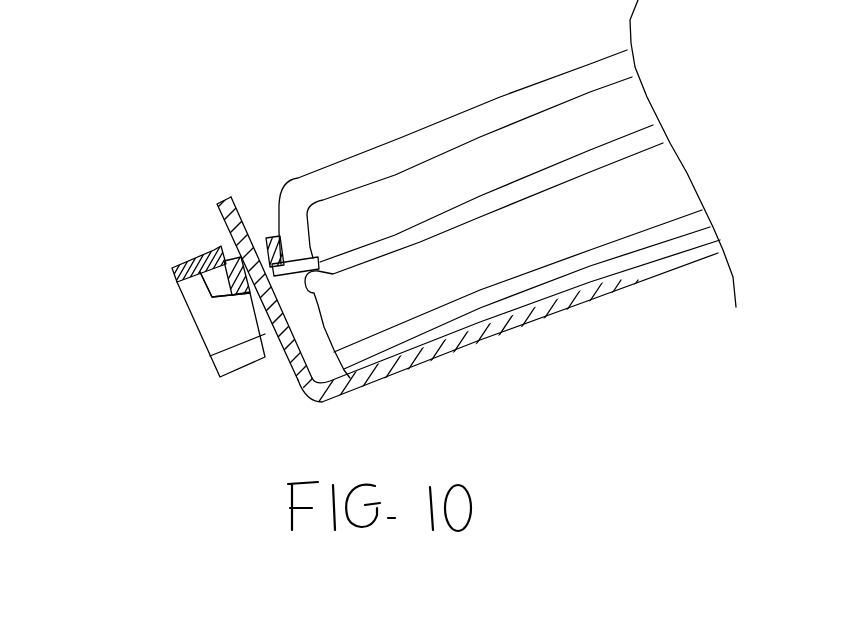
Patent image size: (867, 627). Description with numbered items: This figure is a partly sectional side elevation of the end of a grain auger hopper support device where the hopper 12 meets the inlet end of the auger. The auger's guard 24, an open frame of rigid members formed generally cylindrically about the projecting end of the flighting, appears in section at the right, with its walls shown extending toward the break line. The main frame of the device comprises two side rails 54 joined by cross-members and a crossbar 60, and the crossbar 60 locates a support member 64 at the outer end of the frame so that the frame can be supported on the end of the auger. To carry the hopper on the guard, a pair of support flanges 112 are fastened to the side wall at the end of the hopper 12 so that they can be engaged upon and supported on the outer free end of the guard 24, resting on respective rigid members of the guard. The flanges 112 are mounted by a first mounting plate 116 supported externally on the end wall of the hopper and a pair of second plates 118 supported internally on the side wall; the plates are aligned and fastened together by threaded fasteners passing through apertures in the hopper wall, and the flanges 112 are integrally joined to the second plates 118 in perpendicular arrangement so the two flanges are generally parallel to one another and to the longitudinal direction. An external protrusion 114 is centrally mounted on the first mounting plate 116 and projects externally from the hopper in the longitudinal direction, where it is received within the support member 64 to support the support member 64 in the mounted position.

The hopper 12 is at (233, 202).
The guard 24 is at (420, 230).
The side rail 54 is at (277, 343).
The crossbar 60 is at (210, 356).
The support member 64 is at (176, 278).
The support flange 112 is at (305, 263).
The external protrusion 114 is at (208, 294).
The first mounting plate 116 is at (228, 240).
The second plate 118 is at (259, 236).